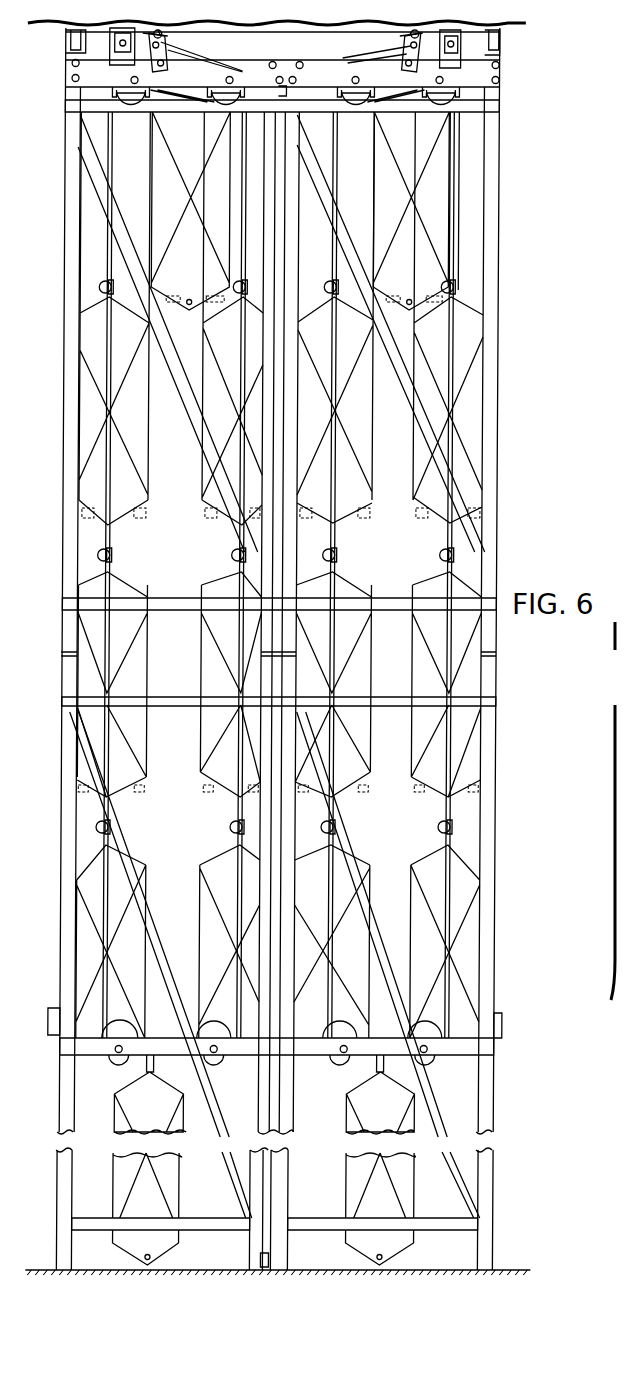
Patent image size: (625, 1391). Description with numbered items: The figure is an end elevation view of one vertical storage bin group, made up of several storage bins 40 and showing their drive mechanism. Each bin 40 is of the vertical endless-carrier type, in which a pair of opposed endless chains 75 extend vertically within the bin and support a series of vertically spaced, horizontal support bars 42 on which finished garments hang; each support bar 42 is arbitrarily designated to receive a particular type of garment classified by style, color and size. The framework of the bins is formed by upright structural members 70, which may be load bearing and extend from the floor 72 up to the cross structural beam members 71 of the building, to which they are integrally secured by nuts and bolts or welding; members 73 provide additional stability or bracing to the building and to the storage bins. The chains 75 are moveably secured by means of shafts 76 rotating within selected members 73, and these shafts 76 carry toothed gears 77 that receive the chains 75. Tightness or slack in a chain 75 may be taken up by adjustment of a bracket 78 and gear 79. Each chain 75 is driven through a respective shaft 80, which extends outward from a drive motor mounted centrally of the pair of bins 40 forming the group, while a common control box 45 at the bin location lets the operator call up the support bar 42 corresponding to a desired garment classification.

The bin 40 is at (60, 419).
The support bar 42 is at (108, 552).
The control box 45 is at (500, 1020).
The upright structural member 70 is at (63, 186).
The cross structural beam member 71 is at (523, 24).
The floor 72 is at (234, 1270).
The member 73 is at (165, 108).
The endless chain 75 is at (106, 268).
The shaft 76 is at (128, 82).
The toothed gear 77 is at (125, 99).
The bracket 78 is at (160, 68).
The gear 79 is at (160, 34).
The shaft 80 is at (118, 48).